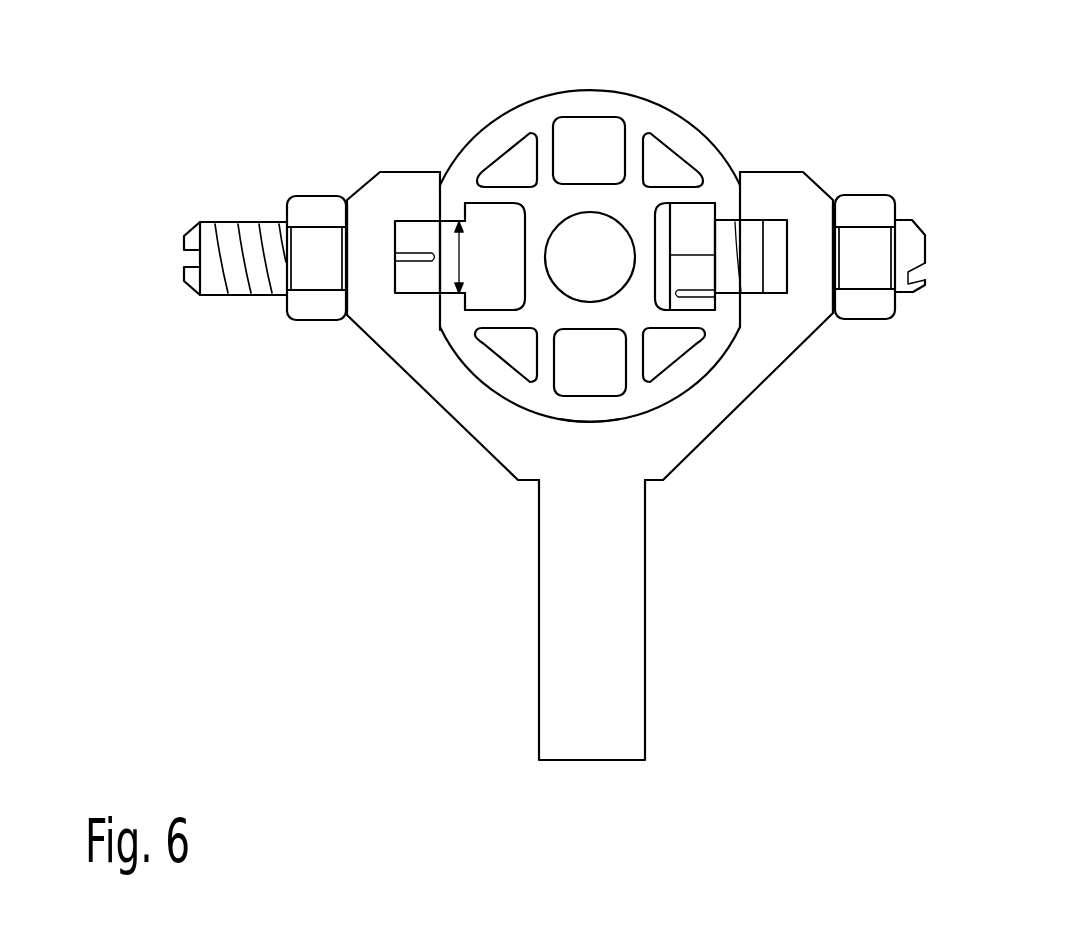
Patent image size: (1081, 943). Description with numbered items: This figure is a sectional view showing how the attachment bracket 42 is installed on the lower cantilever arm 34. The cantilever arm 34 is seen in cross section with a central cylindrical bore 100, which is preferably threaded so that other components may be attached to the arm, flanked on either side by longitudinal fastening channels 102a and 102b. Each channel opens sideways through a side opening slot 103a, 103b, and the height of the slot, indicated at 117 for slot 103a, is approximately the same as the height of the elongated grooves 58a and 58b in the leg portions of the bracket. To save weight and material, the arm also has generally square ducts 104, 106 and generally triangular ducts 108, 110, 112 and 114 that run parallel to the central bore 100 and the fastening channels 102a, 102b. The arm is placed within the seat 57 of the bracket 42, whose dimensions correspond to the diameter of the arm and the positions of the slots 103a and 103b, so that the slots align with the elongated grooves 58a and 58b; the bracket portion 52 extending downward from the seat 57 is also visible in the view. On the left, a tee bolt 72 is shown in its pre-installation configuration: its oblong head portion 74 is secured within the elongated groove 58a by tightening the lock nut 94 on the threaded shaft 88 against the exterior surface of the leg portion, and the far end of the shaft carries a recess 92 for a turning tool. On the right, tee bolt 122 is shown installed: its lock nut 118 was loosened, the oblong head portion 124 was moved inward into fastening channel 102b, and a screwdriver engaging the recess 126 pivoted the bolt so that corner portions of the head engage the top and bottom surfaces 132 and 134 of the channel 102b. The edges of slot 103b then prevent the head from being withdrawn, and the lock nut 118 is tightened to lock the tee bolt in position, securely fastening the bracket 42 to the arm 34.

The lower cantilever arm 34 is at (639, 86).
The attachment bracket 42 is at (401, 410).
The stem 52 is at (617, 653).
The seat 57 is at (599, 427).
The elongated groove 58a is at (395, 272).
The elongated groove 58b is at (792, 268).
The tee bolt 72 is at (235, 236).
The oblong head portion 74 is at (415, 282).
The threaded shaft 88 is at (247, 232).
The recess 92 is at (184, 257).
The lock nut 94 is at (310, 207).
The central cylindrical bore 100 is at (612, 297).
The longitudinal fastening channel 102a is at (488, 250).
The longitudinal fastening channel 102b is at (665, 205).
The side opening slot 103a is at (441, 300).
The side opening slot 103b is at (703, 305).
The square duct 104 is at (582, 137).
The square duct 106 is at (602, 375).
The triangular duct 108 is at (510, 160).
The triangular duct 110 is at (510, 352).
The triangular duct 112 is at (673, 357).
The triangular duct 114 is at (663, 148).
The height of slot 117 is at (456, 250).
The lock nut 118 is at (872, 203).
The tee bolt 122 is at (944, 196).
The oblong head portion 124 is at (740, 220).
The recess 126 is at (925, 272).
The top surface 132 is at (697, 224).
The bottom surface 134 is at (727, 300).